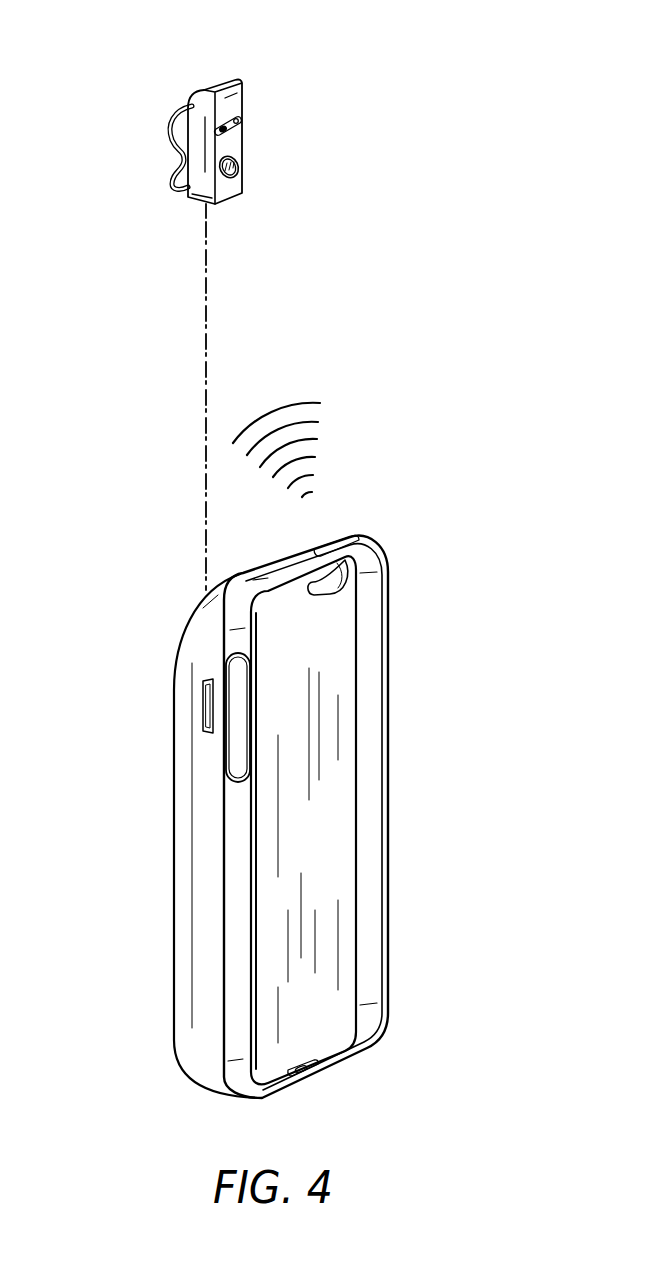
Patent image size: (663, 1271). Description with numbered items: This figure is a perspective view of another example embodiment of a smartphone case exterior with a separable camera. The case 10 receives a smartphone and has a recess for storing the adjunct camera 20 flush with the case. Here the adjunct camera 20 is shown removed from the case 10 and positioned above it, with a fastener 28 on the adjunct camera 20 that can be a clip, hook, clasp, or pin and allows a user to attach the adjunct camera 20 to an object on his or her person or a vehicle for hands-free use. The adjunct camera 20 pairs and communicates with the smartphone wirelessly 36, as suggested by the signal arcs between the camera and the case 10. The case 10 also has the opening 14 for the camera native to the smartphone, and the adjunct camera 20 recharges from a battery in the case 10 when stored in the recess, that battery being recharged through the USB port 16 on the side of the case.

The case 10 is at (395, 556).
The opening 14 is at (340, 587).
The USB port 16 is at (202, 722).
The adjunct camera 20 is at (272, 97).
The fastener 28 is at (175, 137).
The wireless communication 36 is at (305, 403).